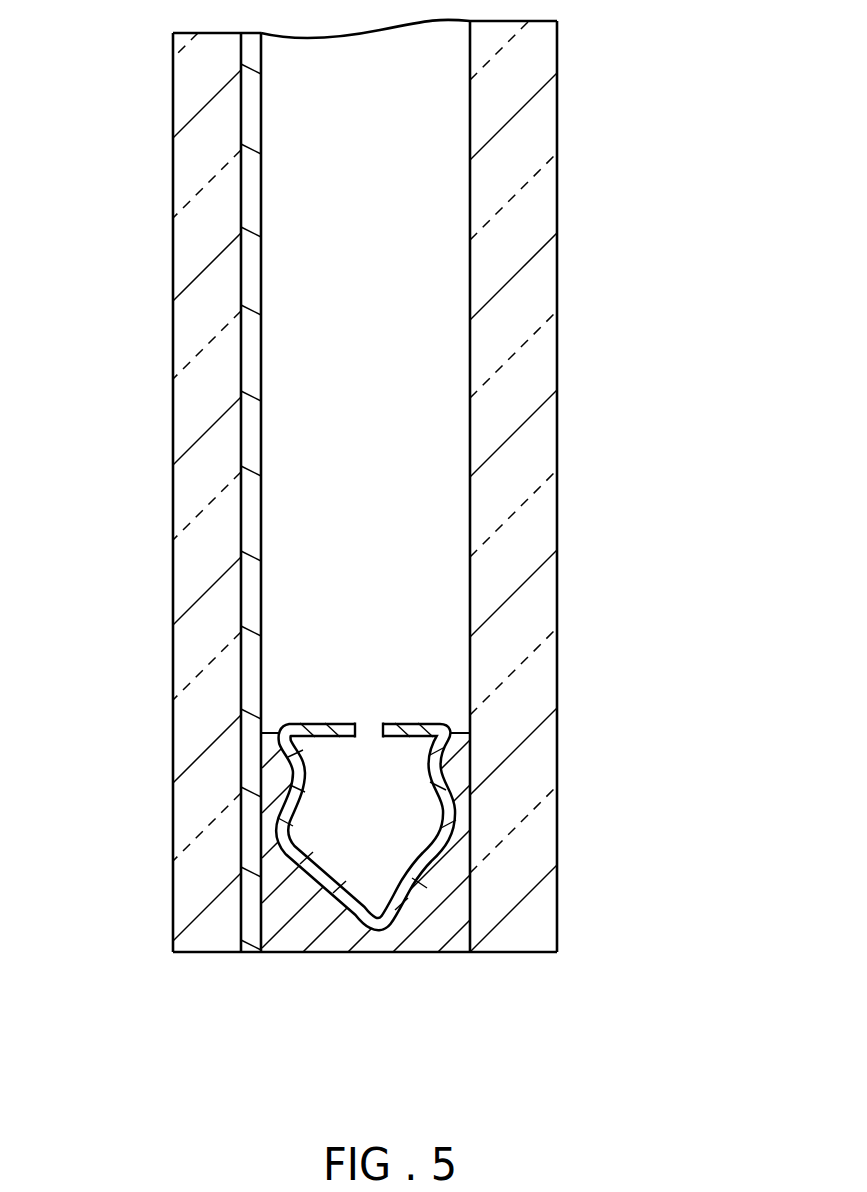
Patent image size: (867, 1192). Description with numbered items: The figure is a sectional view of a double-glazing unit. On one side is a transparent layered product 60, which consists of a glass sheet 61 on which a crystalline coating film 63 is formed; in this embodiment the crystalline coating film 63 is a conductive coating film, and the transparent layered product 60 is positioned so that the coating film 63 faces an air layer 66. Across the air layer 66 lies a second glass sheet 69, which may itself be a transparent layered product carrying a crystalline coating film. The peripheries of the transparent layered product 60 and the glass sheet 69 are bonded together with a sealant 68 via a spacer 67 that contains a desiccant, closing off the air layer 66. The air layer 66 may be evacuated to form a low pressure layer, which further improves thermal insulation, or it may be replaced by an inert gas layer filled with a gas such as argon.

The transparent layered product 60 is at (160, 595).
The glass sheet 61 is at (172, 372).
The crystalline coating film 63 is at (252, 487).
The air layer 66 is at (370, 277).
The spacer 67 is at (439, 730).
The sealant 68 is at (453, 867).
The glass sheet 69 is at (520, 427).